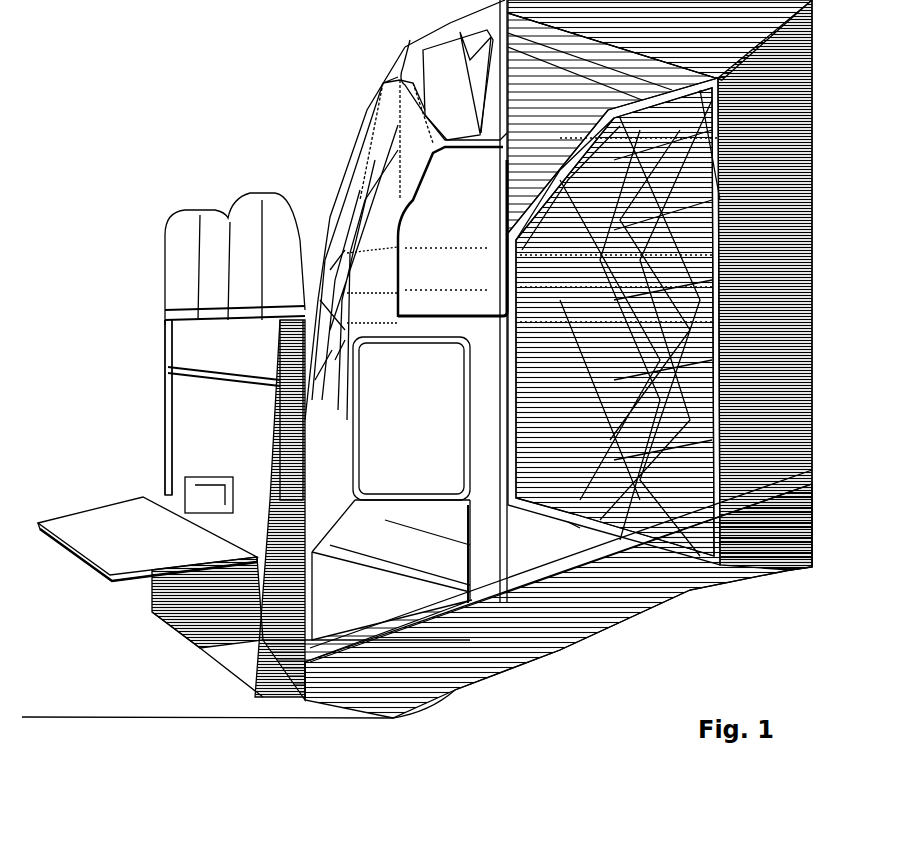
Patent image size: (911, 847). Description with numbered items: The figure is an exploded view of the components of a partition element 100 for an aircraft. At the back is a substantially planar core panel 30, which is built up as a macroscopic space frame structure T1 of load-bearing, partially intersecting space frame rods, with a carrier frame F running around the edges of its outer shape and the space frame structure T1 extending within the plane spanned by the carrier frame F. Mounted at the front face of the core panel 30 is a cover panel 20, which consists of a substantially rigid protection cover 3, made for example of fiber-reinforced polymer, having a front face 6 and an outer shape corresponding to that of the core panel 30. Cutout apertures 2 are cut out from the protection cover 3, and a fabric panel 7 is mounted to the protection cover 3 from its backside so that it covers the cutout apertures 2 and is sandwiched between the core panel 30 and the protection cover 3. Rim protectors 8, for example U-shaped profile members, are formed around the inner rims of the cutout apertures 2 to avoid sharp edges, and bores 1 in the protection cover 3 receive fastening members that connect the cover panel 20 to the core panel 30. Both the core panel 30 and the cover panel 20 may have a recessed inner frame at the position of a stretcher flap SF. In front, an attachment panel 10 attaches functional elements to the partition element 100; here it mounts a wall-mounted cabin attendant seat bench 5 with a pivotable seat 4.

The partition element 100 is at (160, 42).
The attachment panel 10 is at (122, 322).
The cabin attendant seat bench 5 is at (168, 408).
The pivotable seat 4 is at (80, 555).
The cover panel 20 is at (476, 365).
The protection cover 3 is at (367, 110).
The cutout aperture 2 is at (425, 62).
The bore 1 is at (462, 250).
The rim protector 8 is at (380, 337).
The front face 6 is at (390, 555).
The fabric panel 7 is at (455, 510).
The core panel 30 is at (600, 550).
The carrier frame F is at (572, 140).
The stretcher flap SF is at (483, 298).
The space frame structure T1 is at (572, 526).